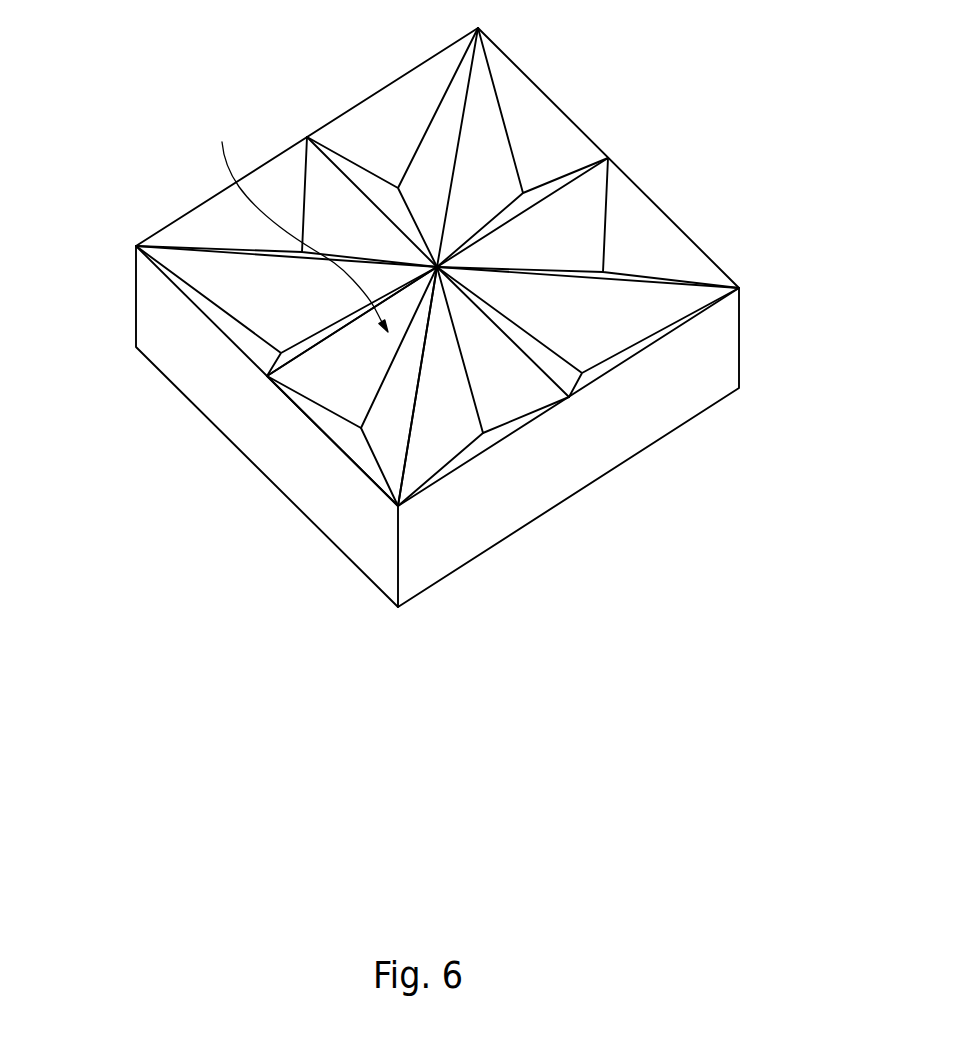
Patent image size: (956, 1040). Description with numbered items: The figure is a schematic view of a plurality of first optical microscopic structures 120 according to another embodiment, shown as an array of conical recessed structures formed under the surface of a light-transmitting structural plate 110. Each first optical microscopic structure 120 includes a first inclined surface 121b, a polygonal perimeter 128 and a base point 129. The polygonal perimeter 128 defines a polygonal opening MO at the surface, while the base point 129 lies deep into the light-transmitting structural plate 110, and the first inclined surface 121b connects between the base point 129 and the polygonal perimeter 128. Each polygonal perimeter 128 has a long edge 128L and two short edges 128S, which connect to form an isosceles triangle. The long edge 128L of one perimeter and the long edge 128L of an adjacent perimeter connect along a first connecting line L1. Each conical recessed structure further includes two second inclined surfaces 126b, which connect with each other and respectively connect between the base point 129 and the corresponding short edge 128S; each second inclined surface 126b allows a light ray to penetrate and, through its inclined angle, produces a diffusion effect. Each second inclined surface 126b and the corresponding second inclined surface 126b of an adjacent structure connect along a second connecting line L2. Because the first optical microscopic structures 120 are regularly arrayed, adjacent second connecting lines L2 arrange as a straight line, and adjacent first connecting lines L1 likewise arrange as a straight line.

The light-transmitting structural plate 110 is at (375, 558).
The first optical microscopic structure 120 is at (408, 443).
The first inclined surface 121b is at (412, 483).
The second inclined surface 126b is at (510, 377).
The polygonal perimeter 128 is at (231, 386).
The short edge 128S is at (328, 343).
The long edge 128L is at (360, 444).
The base point 129 is at (368, 422).
The first connecting line L1 is at (462, 127).
The second connecting line L2 is at (566, 186).
The polygonal opening MO is at (292, 220).